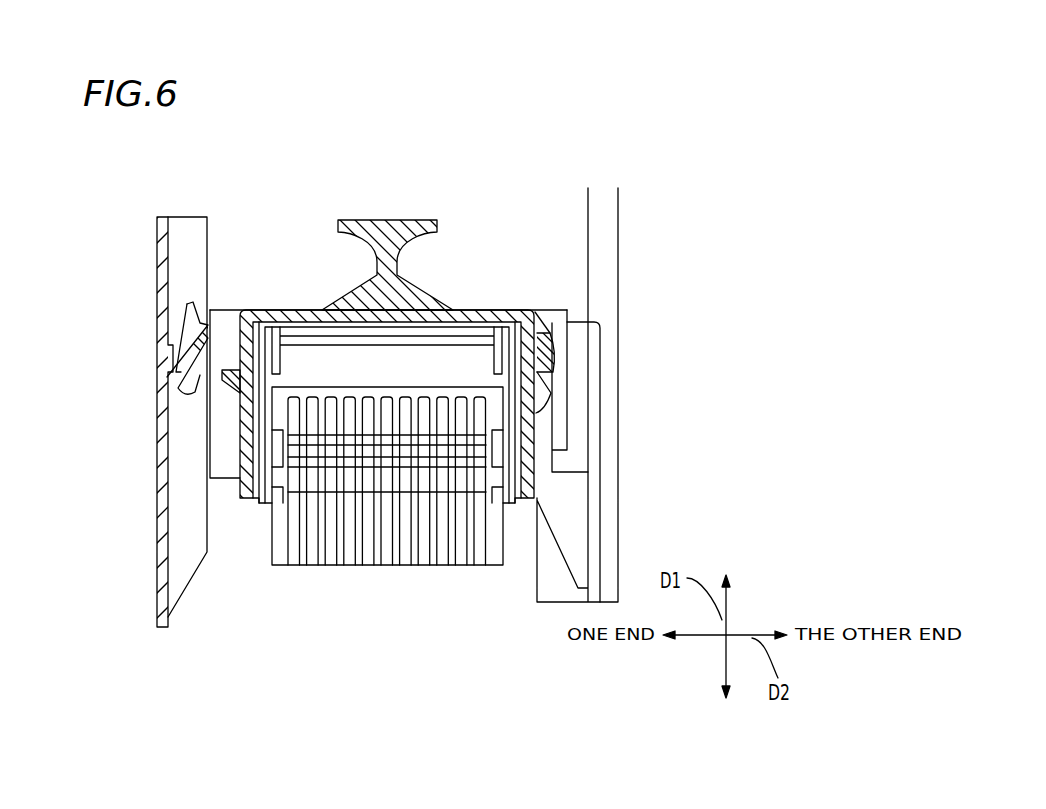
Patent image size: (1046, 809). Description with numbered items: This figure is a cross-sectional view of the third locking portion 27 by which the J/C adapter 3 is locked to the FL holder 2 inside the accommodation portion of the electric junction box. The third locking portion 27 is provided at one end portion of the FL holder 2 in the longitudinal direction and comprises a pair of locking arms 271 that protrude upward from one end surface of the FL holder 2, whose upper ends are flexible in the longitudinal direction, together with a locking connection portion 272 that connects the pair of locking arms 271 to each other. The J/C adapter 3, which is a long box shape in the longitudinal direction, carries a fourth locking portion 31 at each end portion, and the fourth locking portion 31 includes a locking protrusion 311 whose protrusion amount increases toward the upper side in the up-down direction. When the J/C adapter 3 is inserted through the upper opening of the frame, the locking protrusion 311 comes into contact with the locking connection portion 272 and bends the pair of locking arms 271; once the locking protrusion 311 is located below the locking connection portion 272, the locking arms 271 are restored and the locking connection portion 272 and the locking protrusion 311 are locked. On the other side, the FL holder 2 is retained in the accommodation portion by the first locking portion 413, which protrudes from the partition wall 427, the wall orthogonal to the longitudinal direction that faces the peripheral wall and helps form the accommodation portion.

The FL holder 2 is at (563, 614).
The J/C adapter 3 is at (316, 303).
The third locking portion 27 is at (575, 463).
The locking arm 271 is at (543, 418).
The locking connection portion 272 is at (548, 337).
The fourth locking portion 31 is at (390, 383).
The locking protrusion 311 is at (227, 382).
The first locking portion 413 is at (197, 323).
The partition wall 427 is at (168, 542).